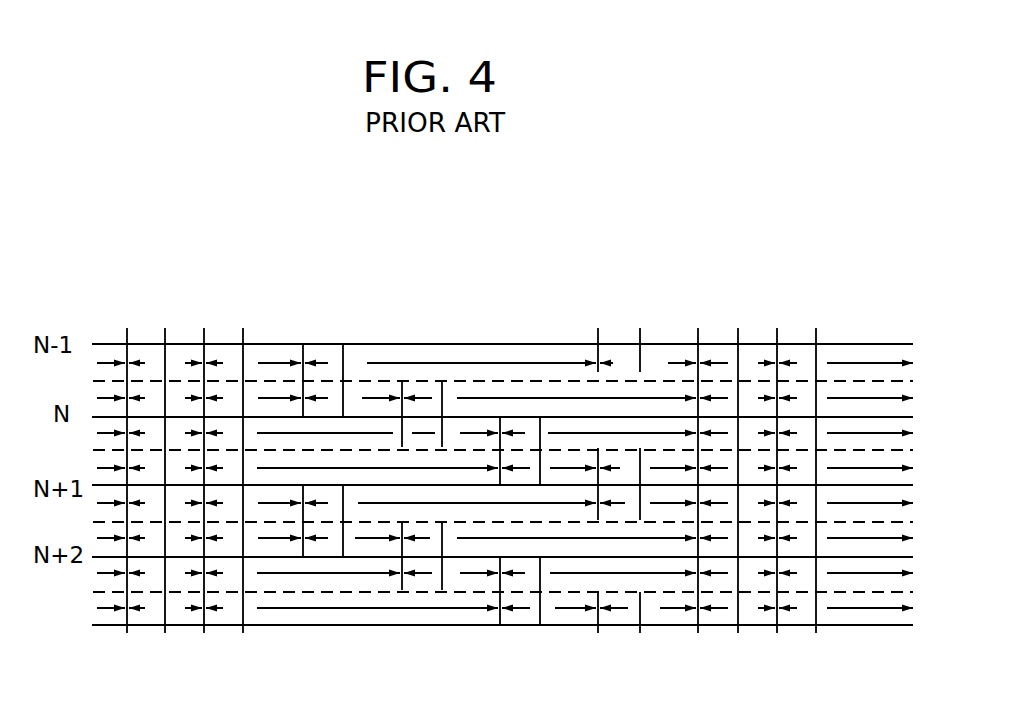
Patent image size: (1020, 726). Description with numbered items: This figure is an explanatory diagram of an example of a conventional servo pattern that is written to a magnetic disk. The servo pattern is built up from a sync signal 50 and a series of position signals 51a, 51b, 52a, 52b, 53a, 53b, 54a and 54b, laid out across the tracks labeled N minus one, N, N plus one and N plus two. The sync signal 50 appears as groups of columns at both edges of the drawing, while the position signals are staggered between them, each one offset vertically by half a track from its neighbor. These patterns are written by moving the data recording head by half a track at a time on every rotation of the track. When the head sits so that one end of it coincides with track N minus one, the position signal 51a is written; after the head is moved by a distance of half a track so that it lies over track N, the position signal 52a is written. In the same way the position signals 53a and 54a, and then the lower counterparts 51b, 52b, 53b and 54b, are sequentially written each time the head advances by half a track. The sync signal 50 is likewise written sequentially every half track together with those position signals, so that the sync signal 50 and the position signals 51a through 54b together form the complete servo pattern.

The sync signal 50 is at (250, 636).
The position signal 51a is at (323, 368).
The position signal 51b is at (328, 542).
The position signal 52a is at (422, 388).
The position signal 52b is at (425, 562).
The position signal 53a is at (518, 437).
The position signal 53b is at (523, 598).
The position signal 54a is at (622, 470).
The position signal 54b is at (623, 600).